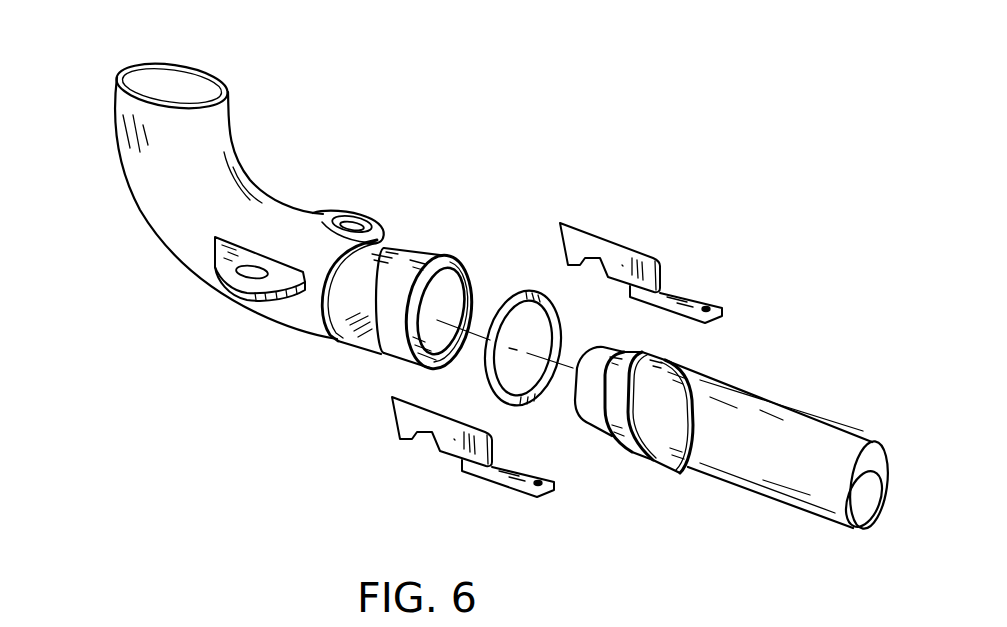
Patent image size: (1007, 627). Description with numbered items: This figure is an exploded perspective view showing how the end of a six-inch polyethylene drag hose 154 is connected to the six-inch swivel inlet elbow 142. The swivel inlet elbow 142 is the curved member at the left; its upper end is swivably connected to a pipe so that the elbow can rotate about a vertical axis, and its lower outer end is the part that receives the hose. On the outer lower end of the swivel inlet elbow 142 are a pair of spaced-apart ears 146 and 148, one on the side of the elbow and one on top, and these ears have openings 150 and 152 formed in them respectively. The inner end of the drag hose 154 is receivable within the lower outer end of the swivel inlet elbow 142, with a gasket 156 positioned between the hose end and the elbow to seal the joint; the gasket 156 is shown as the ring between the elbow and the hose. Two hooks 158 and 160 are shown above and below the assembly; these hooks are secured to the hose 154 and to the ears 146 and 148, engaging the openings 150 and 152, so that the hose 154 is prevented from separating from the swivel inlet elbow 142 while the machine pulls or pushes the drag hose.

The swivel inlet elbow 142 is at (195, 193).
The ear 146 is at (217, 270).
The ear 148 is at (383, 214).
The opening 150 is at (252, 280).
The opening 152 is at (350, 217).
The drag hose 154 is at (774, 402).
The gasket 156 is at (532, 398).
The hook 158 is at (401, 420).
The hook 160 is at (632, 250).